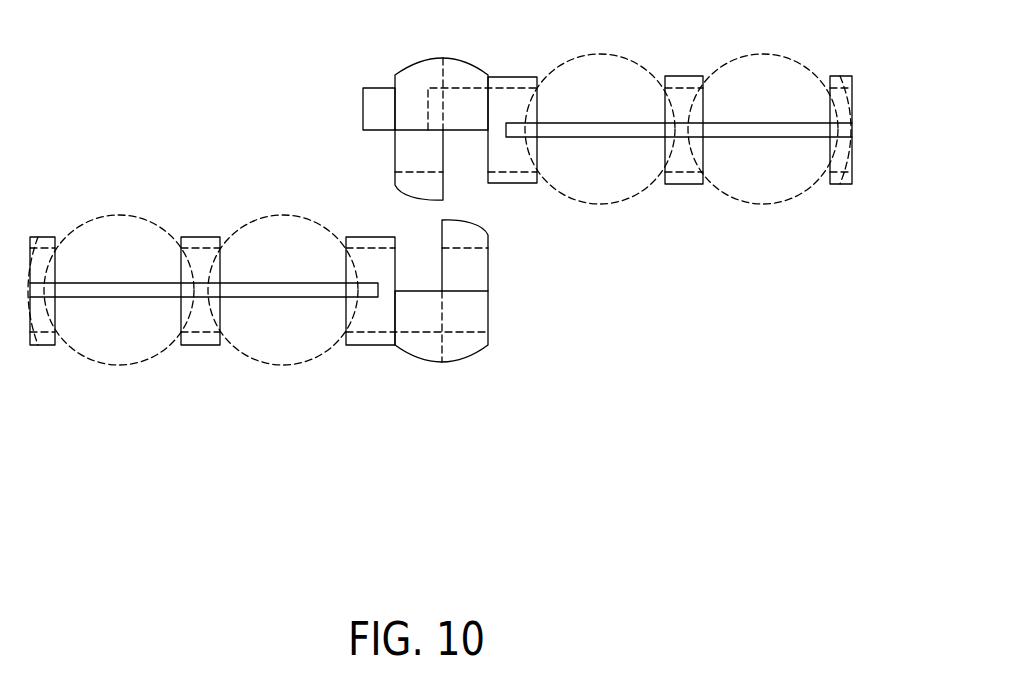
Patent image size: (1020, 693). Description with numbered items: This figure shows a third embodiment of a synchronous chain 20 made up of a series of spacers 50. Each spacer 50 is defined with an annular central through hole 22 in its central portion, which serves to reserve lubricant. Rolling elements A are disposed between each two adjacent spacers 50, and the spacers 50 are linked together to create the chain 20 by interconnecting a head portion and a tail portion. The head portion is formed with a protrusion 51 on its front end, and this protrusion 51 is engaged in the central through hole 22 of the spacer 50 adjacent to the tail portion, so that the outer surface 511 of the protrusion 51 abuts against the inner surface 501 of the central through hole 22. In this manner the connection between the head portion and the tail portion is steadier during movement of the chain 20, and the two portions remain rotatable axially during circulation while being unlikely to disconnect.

The chain 20 is at (683, 190).
The central through hole 22 is at (412, 283).
The spacer 50 is at (685, 82).
The protrusion 51 is at (377, 102).
The inner surface 501 is at (320, 262).
The outer surface 511 is at (372, 141).
The rolling elements A is at (770, 172).